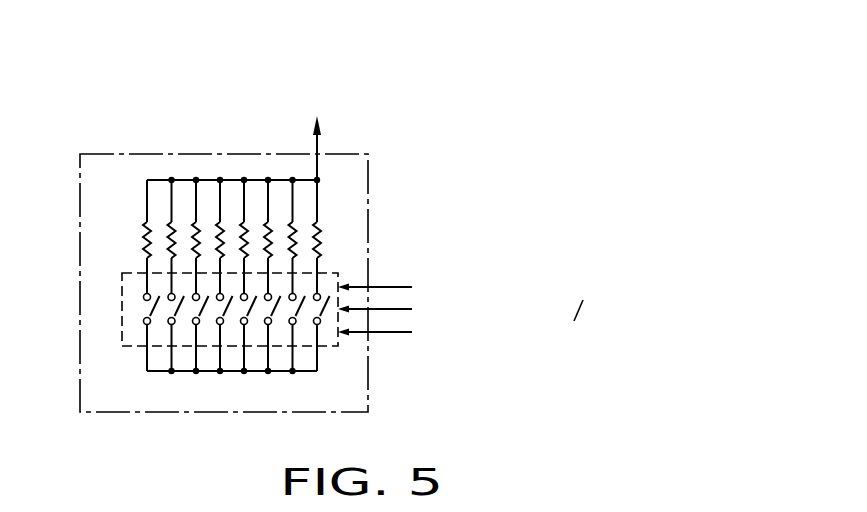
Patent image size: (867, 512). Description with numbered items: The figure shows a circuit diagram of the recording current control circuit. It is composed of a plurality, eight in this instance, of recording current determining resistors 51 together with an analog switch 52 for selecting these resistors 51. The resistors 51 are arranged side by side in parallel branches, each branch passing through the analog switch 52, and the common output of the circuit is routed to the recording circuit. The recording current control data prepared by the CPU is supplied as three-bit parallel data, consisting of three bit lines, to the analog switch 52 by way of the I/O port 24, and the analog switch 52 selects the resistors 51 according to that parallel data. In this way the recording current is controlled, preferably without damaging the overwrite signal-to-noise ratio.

The I/O port 24 is at (368, 176).
The recording current determining resistors 51 is at (326, 243).
The analog switch 52 is at (122, 325).